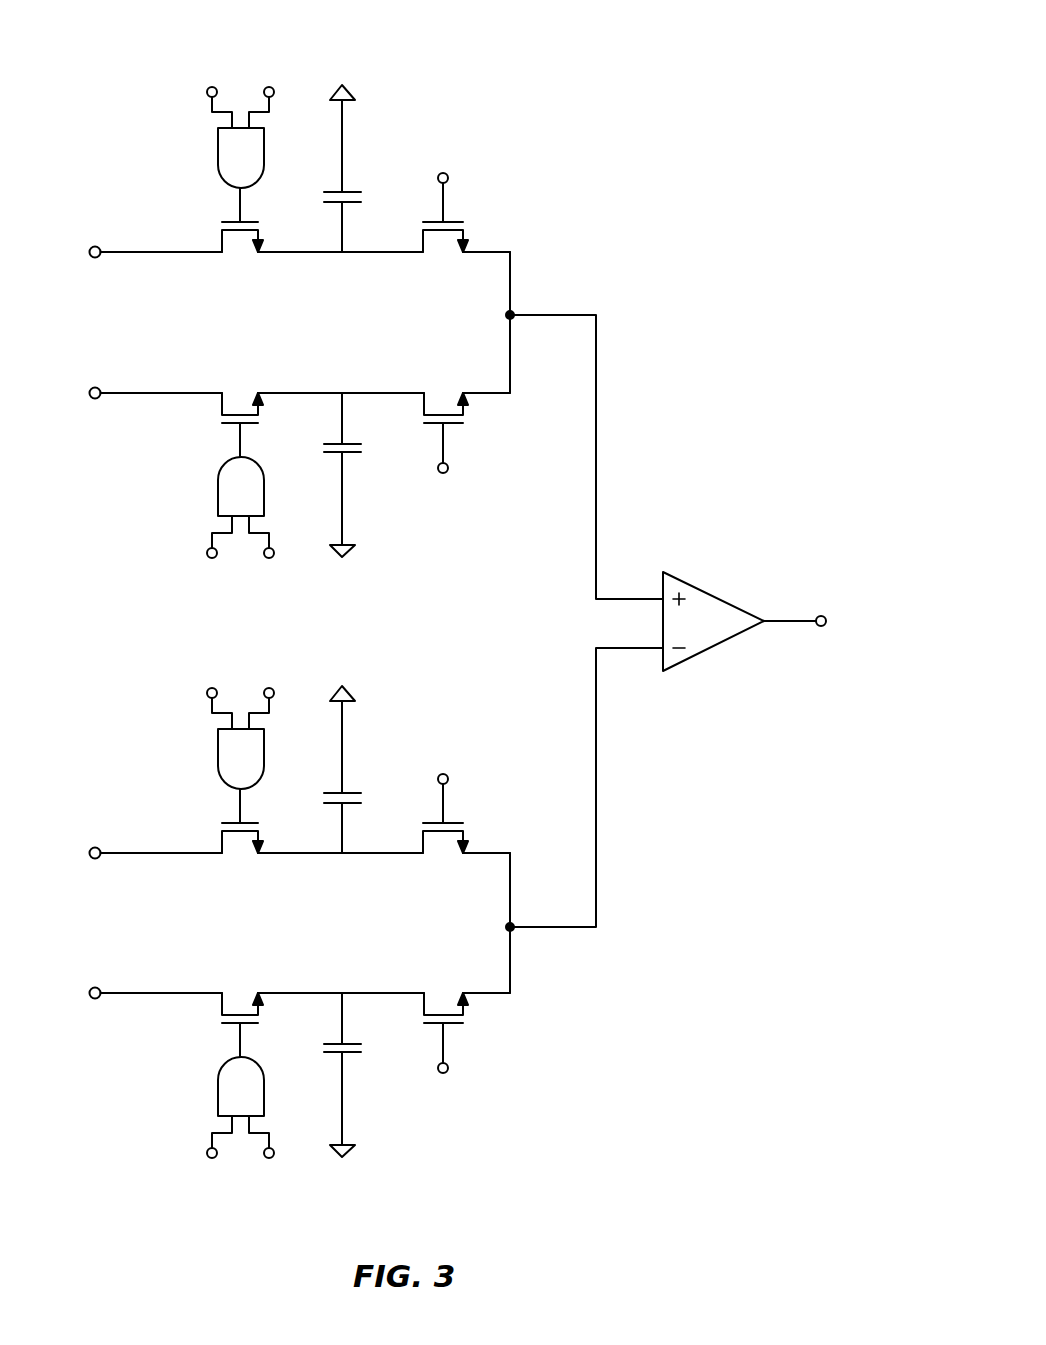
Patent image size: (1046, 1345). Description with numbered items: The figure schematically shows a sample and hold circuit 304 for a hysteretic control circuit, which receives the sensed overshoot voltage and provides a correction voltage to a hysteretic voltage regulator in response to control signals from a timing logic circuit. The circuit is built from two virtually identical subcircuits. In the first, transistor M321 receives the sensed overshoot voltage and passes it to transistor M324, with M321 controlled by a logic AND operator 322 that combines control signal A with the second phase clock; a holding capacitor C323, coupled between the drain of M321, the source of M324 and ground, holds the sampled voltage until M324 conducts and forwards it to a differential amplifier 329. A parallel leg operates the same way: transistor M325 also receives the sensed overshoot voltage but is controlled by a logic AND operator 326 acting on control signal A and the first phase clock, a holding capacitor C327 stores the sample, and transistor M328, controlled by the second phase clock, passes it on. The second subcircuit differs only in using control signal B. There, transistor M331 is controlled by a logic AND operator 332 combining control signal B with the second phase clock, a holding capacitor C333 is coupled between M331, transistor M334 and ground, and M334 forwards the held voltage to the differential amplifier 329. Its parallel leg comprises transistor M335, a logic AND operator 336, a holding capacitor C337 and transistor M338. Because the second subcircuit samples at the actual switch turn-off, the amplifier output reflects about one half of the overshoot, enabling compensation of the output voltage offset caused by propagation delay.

The sample and hold circuit 304 is at (740, 44).
The logic AND operator 322 is at (218, 162).
The transistor M321 is at (230, 222).
The holding capacitor C323 is at (345, 192).
The transistor M324 is at (458, 223).
The transistor M325 is at (226, 423).
The logic AND operator 326 is at (218, 483).
The holding capacitor C327 is at (345, 452).
The transistor M328 is at (455, 423).
The differential amplifier 329 is at (685, 580).
The logic AND operator 332 is at (218, 763).
The transistor M331 is at (230, 823).
The holding capacitor C333 is at (345, 793).
The transistor M334 is at (458, 824).
The transistor M335 is at (226, 1023).
The logic AND operator 336 is at (218, 1083).
The holding capacitor C337 is at (345, 1052).
The transistor M338 is at (455, 1023).